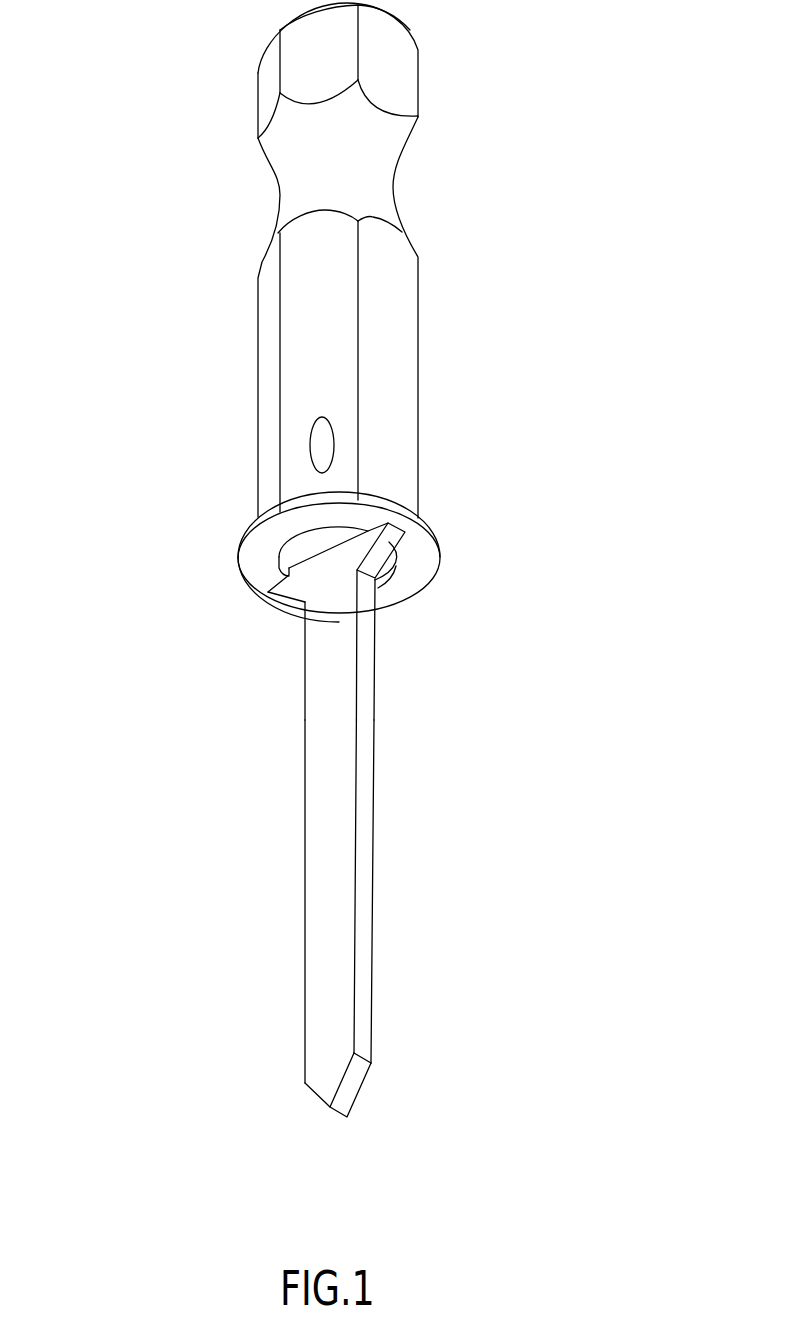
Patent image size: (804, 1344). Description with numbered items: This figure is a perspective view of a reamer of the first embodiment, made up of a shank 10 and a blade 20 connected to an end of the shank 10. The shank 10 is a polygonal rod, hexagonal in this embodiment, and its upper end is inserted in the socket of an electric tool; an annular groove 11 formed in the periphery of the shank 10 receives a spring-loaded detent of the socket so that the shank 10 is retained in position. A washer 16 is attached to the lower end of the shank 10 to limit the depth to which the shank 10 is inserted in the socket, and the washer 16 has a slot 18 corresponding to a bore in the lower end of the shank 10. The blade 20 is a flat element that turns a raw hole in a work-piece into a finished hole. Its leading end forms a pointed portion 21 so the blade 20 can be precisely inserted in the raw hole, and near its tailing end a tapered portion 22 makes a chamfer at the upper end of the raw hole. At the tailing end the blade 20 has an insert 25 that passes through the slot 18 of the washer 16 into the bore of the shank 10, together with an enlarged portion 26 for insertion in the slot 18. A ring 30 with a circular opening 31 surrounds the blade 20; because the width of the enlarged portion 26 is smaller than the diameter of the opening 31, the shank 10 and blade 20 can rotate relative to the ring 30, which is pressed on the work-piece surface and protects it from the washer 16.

The shank 10 is at (395, 337).
The annular groove 11 is at (400, 178).
The washer 16 is at (318, 543).
The slot 18 is at (400, 548).
The blade 20 is at (368, 988).
The pointed portion 21 is at (343, 1105).
The tapered portion 22 is at (295, 590).
The insert 25 is at (320, 588).
The enlarged portion 26 is at (290, 559).
The ring 30 is at (413, 587).
The opening 31 is at (280, 566).